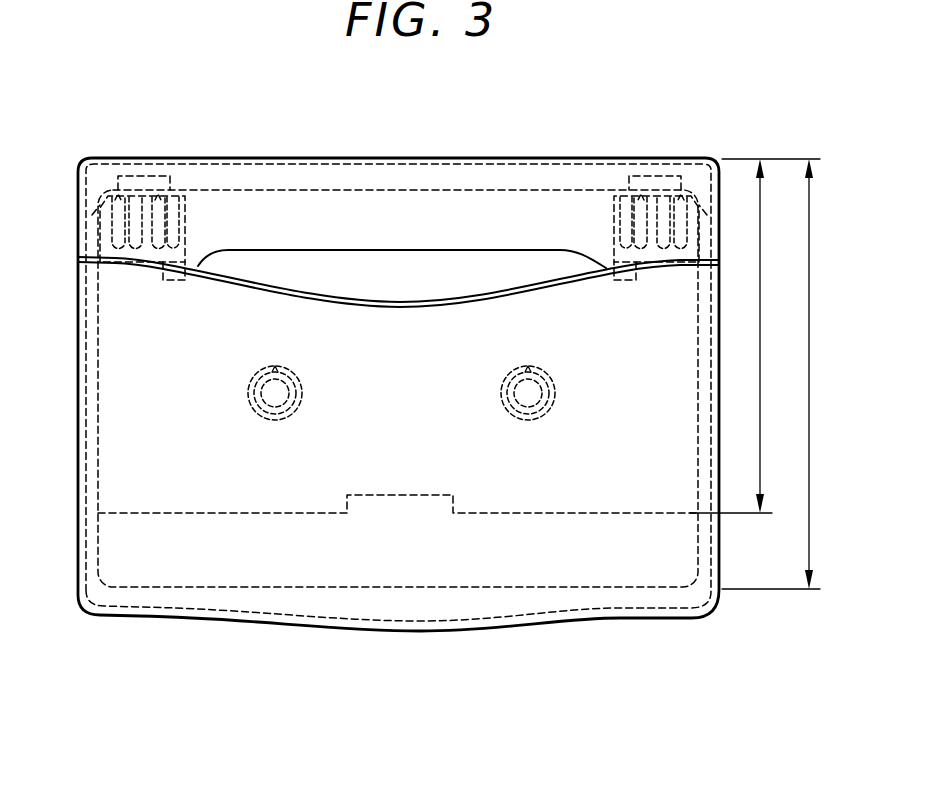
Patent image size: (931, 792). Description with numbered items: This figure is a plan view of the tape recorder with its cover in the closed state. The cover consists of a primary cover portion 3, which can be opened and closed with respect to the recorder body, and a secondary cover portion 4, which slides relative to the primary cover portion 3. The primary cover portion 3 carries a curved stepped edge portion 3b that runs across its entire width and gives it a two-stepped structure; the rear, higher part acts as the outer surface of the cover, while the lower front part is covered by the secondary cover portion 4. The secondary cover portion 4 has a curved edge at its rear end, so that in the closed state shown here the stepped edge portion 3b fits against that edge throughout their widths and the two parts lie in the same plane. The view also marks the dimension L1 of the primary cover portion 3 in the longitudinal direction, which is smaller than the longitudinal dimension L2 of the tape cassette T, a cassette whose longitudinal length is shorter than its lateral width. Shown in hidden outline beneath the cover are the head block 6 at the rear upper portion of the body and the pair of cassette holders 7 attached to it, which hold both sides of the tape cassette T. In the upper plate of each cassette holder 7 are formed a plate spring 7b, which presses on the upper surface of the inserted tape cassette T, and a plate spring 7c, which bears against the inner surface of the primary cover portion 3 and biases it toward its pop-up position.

The primary cover portion 3 is at (333, 218).
The stepped edge portion 3b is at (572, 290).
The secondary cover portion 4 is at (553, 624).
The head block 6 is at (390, 170).
The cassette holder 7 is at (184, 218).
The plate spring 7b is at (121, 172).
The plate spring 7c is at (152, 193).
The tape cassette T is at (71, 580).
The dimension of the primary cover portion in the longitudinal directions L1 is at (734, 336).
The dimension of the tape cassette in the longitudinal directions L2 is at (775, 374).